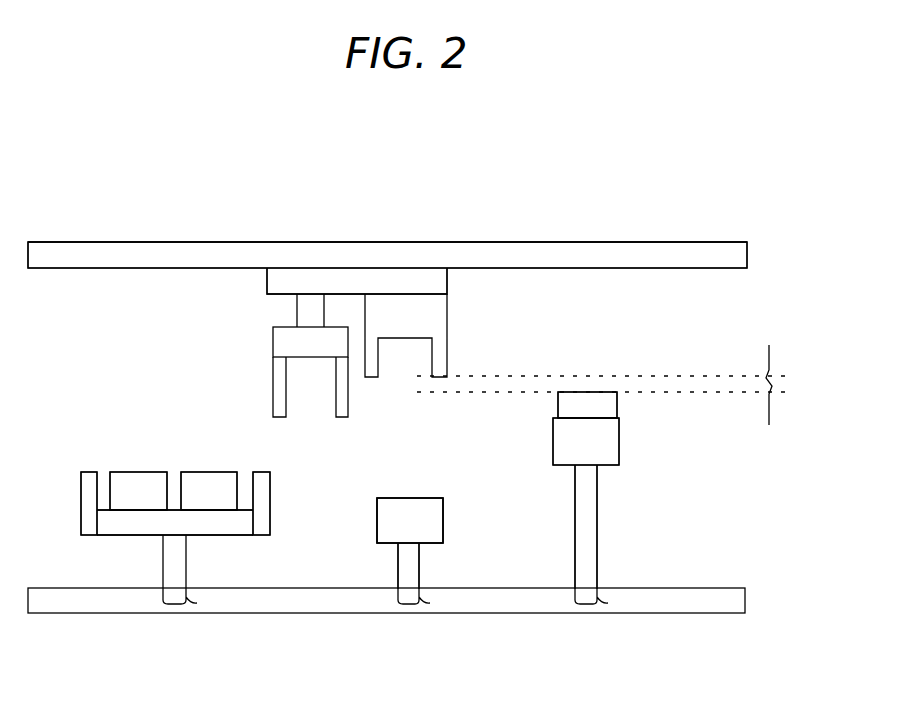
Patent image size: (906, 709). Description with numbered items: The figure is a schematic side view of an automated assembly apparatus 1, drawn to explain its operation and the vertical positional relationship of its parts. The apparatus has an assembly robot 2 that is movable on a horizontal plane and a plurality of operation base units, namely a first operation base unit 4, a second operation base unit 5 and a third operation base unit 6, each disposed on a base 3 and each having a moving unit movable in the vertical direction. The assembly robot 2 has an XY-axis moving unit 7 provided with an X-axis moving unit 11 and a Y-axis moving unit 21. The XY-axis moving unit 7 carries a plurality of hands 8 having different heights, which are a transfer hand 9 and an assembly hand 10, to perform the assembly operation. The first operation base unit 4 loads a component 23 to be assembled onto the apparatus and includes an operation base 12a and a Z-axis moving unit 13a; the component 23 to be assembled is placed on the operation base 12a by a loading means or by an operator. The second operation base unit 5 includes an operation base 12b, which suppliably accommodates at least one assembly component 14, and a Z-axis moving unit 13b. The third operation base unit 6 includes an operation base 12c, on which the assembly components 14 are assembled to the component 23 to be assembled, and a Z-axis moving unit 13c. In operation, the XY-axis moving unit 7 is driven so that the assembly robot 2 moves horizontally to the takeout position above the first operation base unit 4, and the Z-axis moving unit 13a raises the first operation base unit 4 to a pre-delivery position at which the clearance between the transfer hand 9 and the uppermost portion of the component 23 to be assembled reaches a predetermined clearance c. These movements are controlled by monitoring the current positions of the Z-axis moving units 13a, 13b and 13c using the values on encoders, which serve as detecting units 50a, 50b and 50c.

The automated assembly apparatus 1 is at (750, 212).
The assembly robot 2 is at (372, 218).
The base 3 is at (326, 613).
The first operation base unit 4 is at (630, 513).
The second operation base unit 5 is at (211, 560).
The third operation base unit 6 is at (433, 563).
The XY-axis moving unit 7 is at (240, 168).
The hands 8 is at (388, 415).
The transfer hand 9 is at (447, 327).
The assembly hand 10 is at (273, 342).
The X-axis moving unit 11 is at (297, 272).
The operation base 12a is at (619, 446).
The operation base 12b is at (121, 537).
The operation base 12c is at (443, 527).
The Z-axis moving unit 13a is at (582, 598).
The Z-axis moving unit 13b is at (165, 598).
The Z-axis moving unit 13c is at (404, 598).
The assembly components 14 is at (190, 472).
The Y-axis moving unit 21 is at (255, 243).
The component to be assembled 23 is at (617, 407).
The detecting unit 50a is at (607, 600).
The detecting unit 50b is at (190, 600).
The detecting unit 50c is at (430, 600).
The predetermined clearance c is at (609, 385).